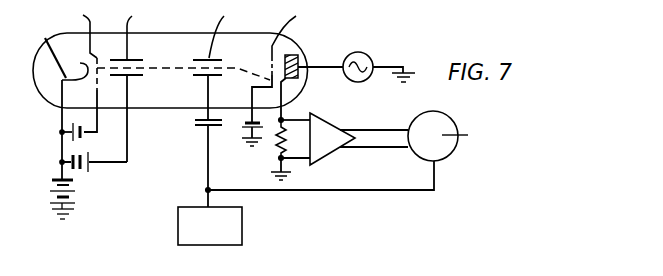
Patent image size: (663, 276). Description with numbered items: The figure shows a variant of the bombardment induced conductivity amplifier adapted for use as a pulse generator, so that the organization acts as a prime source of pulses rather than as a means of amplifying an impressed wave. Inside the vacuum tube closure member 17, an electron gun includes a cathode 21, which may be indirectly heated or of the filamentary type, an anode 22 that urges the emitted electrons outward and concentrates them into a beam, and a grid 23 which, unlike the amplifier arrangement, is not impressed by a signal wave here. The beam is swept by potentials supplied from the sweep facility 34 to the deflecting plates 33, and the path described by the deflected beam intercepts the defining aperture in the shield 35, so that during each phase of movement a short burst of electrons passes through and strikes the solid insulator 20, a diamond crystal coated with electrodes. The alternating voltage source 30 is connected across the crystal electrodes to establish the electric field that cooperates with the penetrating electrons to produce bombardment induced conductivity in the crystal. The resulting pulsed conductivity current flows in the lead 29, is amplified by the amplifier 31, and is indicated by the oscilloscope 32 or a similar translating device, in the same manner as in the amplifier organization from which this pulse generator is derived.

The vacuum tube closure member 17 is at (176, 32).
The solid insulator 20 is at (299, 54).
The cathode 21 is at (44, 40).
The anode 22 is at (130, 84).
The grid 23 is at (80, 69).
The lead 29 is at (284, 107).
The alternating voltage source 30 is at (365, 53).
The amplifier 31 is at (328, 121).
The oscilloscope 32 is at (447, 104).
The deflecting plates 33 is at (217, 63).
The sweep facility 34 is at (242, 224).
The shield 35 is at (283, 64).